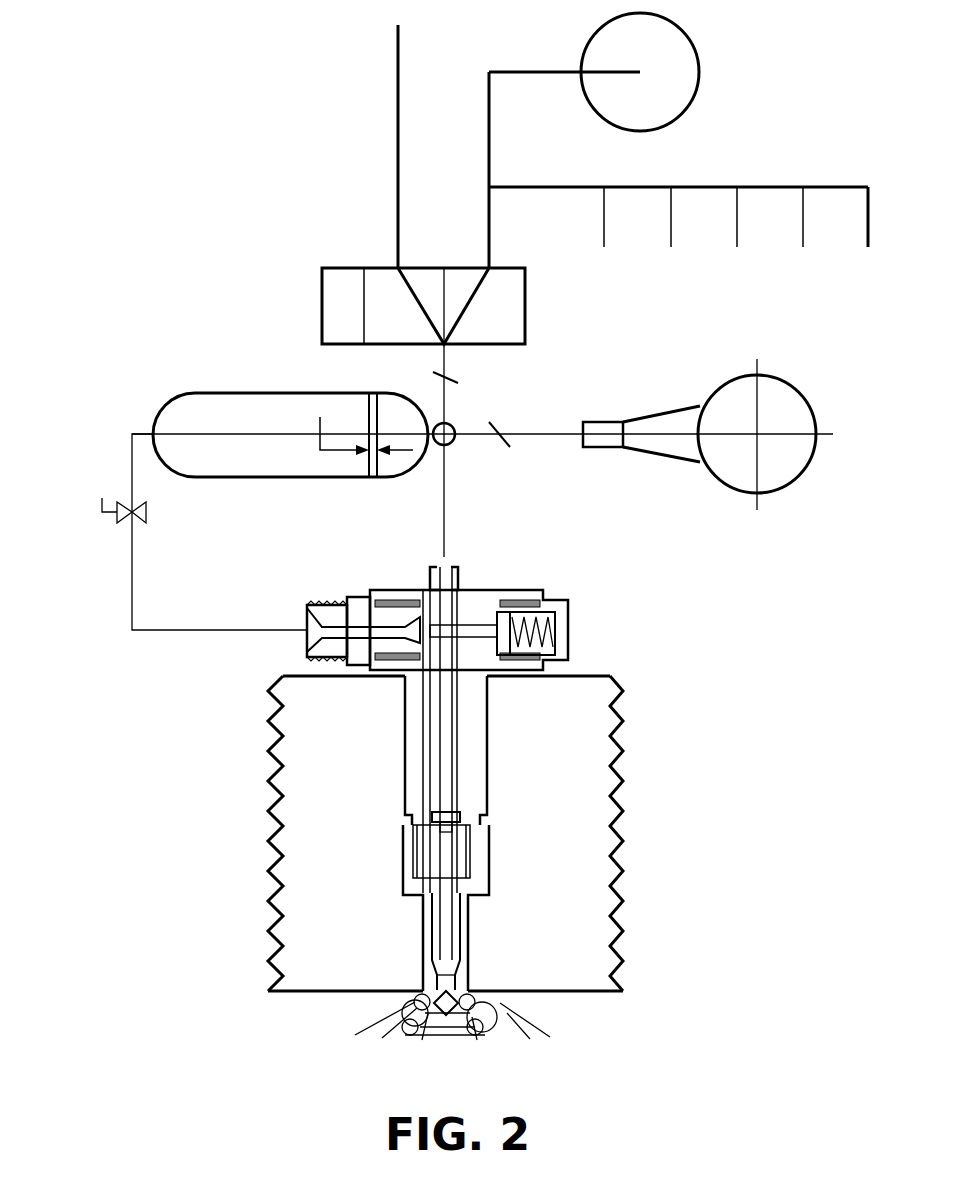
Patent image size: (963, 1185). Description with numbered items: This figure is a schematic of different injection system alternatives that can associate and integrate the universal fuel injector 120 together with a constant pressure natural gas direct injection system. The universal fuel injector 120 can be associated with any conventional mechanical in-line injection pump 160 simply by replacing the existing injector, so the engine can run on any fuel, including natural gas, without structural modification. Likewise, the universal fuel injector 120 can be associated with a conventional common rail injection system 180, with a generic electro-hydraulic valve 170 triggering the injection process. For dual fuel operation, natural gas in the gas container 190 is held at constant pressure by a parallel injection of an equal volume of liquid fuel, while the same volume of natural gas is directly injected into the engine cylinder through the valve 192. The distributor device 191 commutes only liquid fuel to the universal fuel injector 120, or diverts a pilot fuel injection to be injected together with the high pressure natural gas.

The universal fuel injector 120 is at (412, 744).
The conventional mechanical in-line injection pump 160 is at (783, 380).
The electro-hydraulic valve 170 is at (375, 293).
The common rail injection system 180 is at (705, 187).
The gas container 190 is at (185, 413).
The distributor device 191 is at (455, 444).
The valve 192 is at (117, 522).